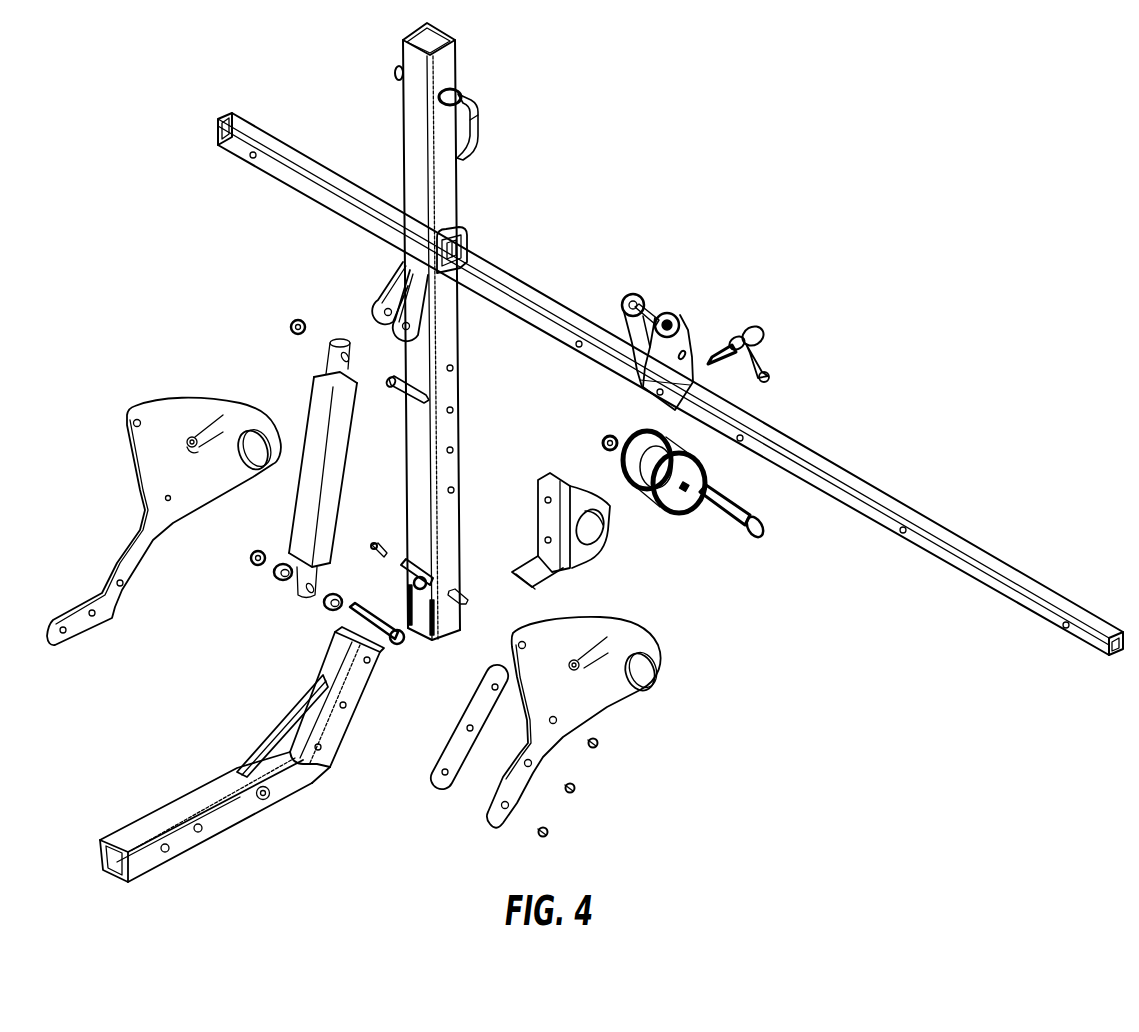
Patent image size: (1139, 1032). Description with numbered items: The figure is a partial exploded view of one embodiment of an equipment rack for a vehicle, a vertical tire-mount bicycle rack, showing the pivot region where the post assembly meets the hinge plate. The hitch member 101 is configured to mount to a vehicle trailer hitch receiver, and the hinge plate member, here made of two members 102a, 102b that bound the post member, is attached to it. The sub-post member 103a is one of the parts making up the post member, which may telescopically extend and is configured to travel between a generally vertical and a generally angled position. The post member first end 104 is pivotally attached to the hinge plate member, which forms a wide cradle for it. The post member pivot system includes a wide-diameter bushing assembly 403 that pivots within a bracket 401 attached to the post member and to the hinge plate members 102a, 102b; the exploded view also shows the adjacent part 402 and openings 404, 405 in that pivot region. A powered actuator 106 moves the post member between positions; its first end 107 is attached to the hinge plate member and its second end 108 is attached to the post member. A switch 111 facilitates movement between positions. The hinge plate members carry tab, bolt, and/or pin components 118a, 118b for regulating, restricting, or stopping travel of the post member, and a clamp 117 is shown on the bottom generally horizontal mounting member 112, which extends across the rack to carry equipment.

The hitch member 101 is at (187, 833).
The hinge plate member 102a is at (166, 497).
The hinge plate member 102b is at (575, 727).
The sub-post member 103a is at (448, 338).
The post member first end 104 is at (423, 630).
The powered actuator 106 is at (318, 398).
The powered actuator first end 107 is at (297, 578).
The powered actuator second end 108 is at (323, 360).
The switch 111 is at (445, 243).
The bottom generally horizontal mounting member 112 is at (952, 536).
The clamp bracket 117 is at (686, 340).
The tab, bolt, and/or pin component 118a is at (190, 440).
The tab, bolt, and/or pin component 118b is at (600, 653).
The bracket 401 is at (590, 533).
The roller bracket 402 is at (612, 550).
The bushing assembly 403 is at (643, 485).
The pivot hole 404 is at (637, 670).
The pivot hole 405 is at (253, 450).